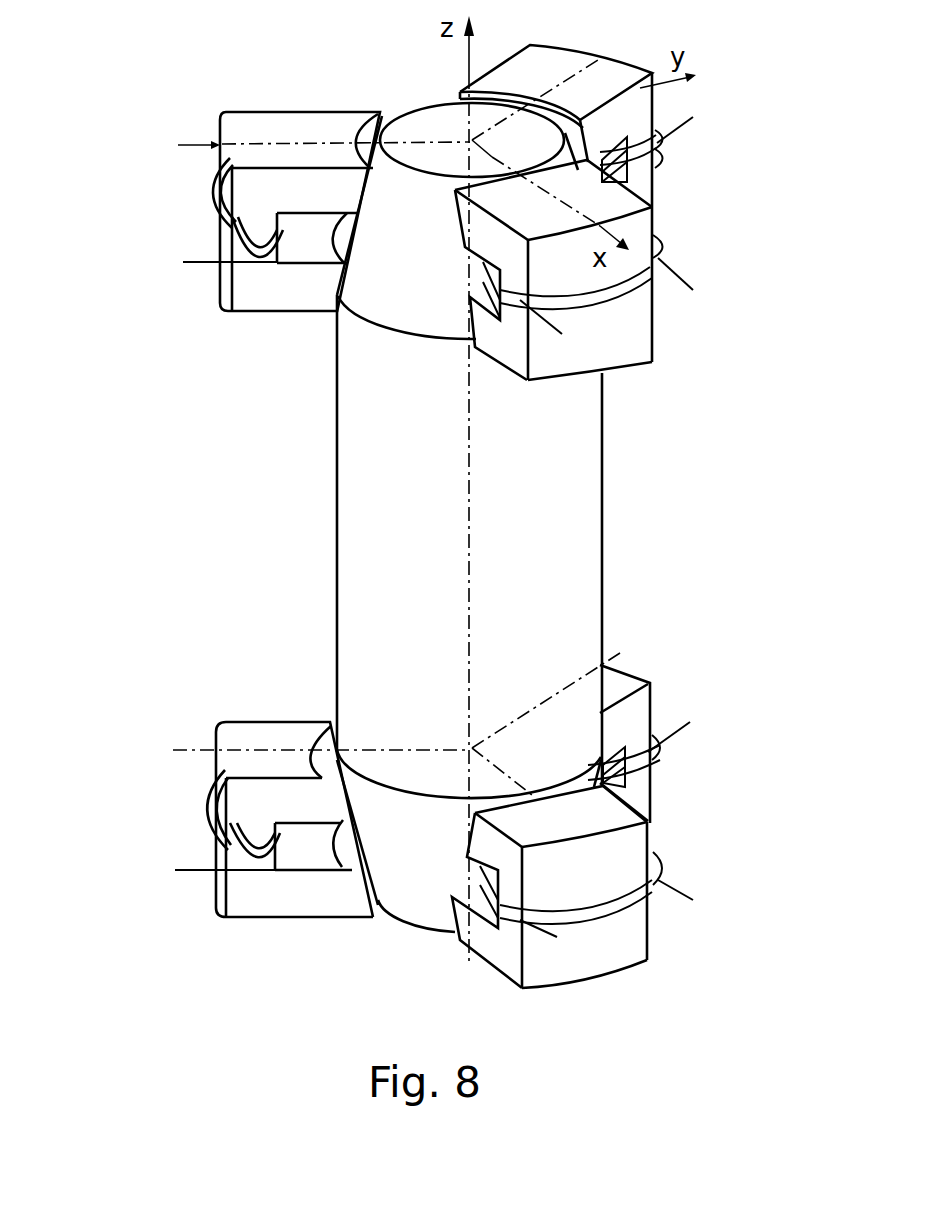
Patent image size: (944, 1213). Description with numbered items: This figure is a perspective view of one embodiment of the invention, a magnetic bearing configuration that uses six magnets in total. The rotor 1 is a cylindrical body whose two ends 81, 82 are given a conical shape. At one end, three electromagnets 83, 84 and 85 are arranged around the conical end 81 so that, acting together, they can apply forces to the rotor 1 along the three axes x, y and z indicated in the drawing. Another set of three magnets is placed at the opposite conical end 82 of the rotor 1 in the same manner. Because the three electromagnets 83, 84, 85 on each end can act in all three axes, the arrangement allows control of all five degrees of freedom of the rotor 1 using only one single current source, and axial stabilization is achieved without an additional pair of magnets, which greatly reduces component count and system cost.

The rotor 1 is at (607, 473).
The end of the rotor 81 is at (427, 110).
The end of the rotor 82 is at (403, 923).
The electromagnet 83 is at (202, 239).
The electromagnet 84 is at (666, 93).
The electromagnet 85 is at (666, 330).